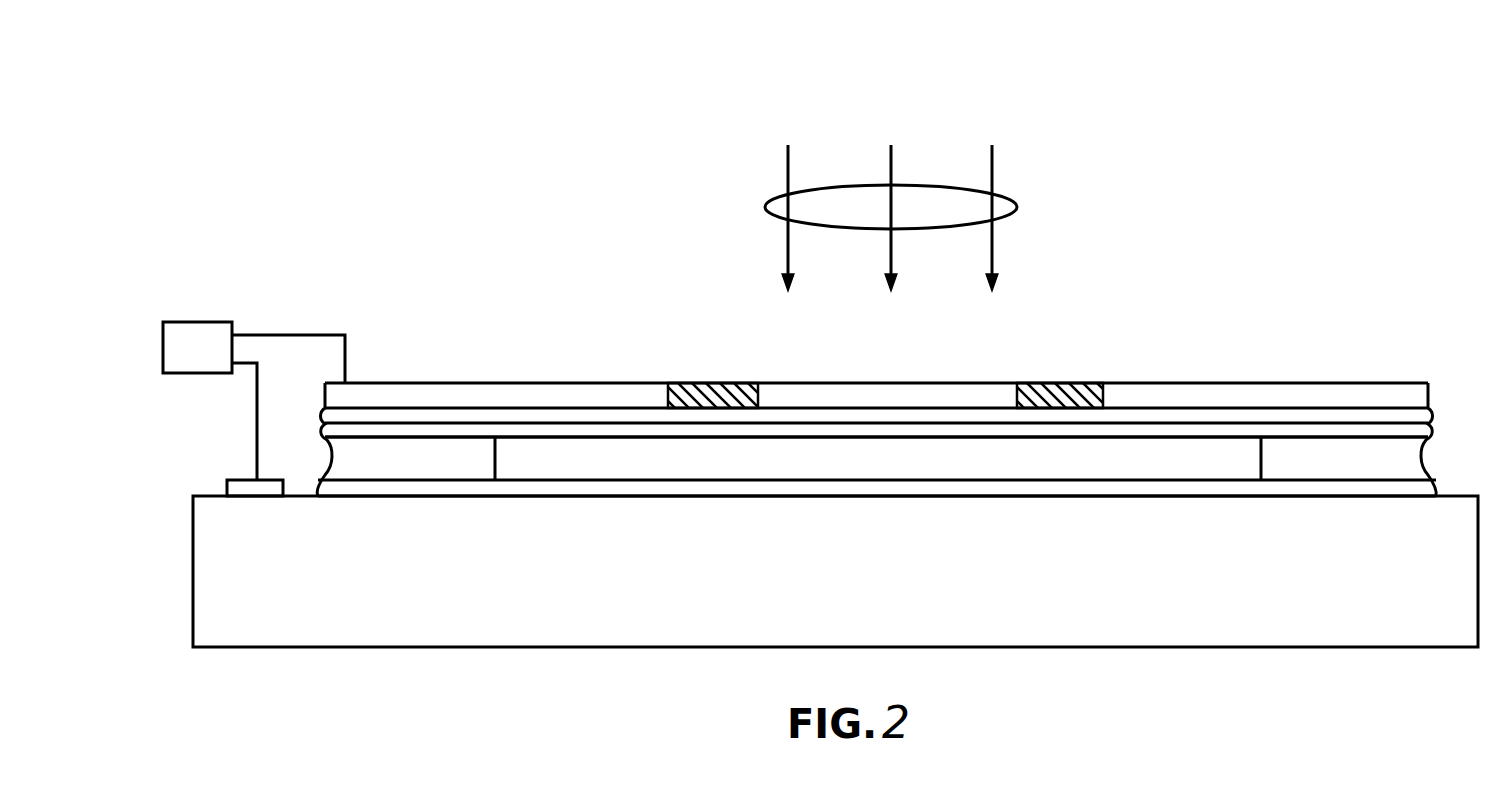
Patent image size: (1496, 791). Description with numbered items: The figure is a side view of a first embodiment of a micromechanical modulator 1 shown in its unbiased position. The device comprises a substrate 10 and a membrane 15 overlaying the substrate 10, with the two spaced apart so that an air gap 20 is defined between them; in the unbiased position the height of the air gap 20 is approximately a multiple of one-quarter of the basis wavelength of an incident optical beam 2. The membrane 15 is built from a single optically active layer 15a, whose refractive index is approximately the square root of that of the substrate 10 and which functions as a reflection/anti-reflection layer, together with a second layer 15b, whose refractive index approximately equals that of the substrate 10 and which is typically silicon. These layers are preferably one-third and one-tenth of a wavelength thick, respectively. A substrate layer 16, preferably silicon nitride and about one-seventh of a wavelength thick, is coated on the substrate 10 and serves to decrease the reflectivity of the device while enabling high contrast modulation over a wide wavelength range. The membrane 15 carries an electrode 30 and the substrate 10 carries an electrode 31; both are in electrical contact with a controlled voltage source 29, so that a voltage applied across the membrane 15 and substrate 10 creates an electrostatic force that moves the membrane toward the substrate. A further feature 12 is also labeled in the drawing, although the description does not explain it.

The micromechanical modulator 1 is at (408, 144).
The incident optical beam 2 is at (780, 198).
The substrate 10 is at (838, 583).
The support 12 is at (422, 475).
The membrane 15 is at (1438, 383).
The optically active layer 15a is at (630, 418).
The second layer 15b is at (603, 430).
The substrate layer 16 is at (438, 487).
The air gap 20 is at (945, 475).
The controlled voltage source 29 is at (192, 321).
The electrode 30 is at (495, 385).
The electrode 31 is at (237, 480).